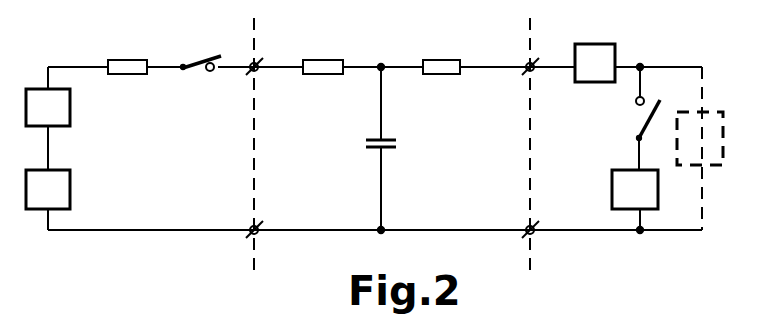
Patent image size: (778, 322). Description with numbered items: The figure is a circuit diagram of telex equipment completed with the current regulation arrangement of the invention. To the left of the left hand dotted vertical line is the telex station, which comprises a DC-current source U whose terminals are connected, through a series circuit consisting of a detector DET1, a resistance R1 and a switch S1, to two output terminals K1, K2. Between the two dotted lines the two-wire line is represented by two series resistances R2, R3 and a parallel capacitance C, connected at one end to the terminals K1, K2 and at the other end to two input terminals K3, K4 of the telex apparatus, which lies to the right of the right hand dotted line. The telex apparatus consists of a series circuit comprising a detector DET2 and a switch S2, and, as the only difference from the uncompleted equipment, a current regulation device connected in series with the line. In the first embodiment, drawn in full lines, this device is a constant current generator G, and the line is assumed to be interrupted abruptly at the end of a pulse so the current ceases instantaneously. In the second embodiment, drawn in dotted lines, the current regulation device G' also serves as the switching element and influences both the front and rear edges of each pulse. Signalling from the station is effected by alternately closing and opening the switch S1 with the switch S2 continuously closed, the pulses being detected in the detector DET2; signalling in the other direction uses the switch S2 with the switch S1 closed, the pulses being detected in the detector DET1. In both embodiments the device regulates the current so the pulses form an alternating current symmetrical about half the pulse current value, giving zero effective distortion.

The detector DET1 is at (77, 107).
The DC-current source U is at (58, 189).
The resistance R1 is at (129, 60).
The switch S1 is at (201, 61).
The output terminal K1 is at (258, 72).
The output terminal K2 is at (267, 240).
The series resistance R2 is at (323, 60).
The series resistance R3 is at (441, 60).
The parallel capacitance C is at (390, 145).
The input terminal K3 is at (526, 74).
The input terminal K4 is at (543, 240).
The detector DET2 is at (595, 44).
The switch S2 is at (645, 122).
The constant current generator G is at (624, 189).
The current regulation device G' is at (702, 123).